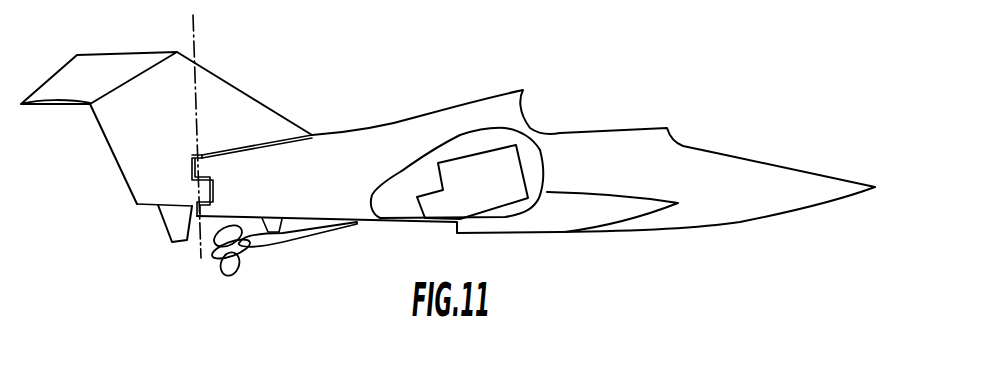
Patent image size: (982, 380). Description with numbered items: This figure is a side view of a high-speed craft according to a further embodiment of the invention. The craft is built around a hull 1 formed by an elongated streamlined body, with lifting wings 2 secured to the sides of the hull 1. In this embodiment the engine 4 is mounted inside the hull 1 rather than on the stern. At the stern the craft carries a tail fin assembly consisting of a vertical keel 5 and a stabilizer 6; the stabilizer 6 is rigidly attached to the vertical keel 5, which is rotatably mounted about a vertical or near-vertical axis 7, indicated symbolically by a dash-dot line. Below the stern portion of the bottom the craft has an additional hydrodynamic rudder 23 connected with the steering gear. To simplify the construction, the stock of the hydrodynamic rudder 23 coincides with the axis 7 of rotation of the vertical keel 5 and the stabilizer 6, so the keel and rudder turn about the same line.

The hull 1 is at (703, 208).
The lifting wings 2 is at (608, 210).
The engine 4 is at (505, 168).
The vertical keel 5 is at (243, 117).
The stabilizer 6 is at (88, 82).
The axis 7 is at (193, 28).
The hydrodynamic rudder 23 is at (172, 218).